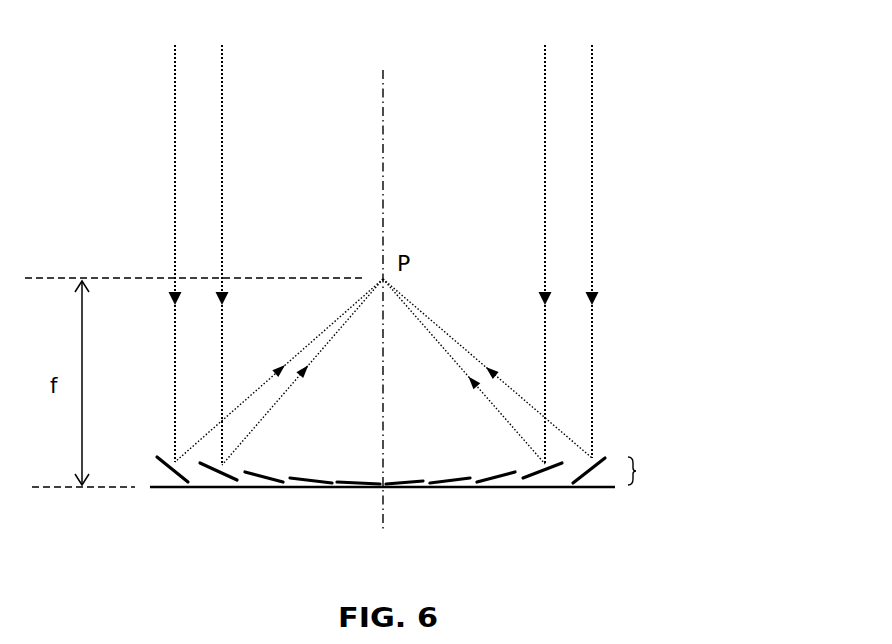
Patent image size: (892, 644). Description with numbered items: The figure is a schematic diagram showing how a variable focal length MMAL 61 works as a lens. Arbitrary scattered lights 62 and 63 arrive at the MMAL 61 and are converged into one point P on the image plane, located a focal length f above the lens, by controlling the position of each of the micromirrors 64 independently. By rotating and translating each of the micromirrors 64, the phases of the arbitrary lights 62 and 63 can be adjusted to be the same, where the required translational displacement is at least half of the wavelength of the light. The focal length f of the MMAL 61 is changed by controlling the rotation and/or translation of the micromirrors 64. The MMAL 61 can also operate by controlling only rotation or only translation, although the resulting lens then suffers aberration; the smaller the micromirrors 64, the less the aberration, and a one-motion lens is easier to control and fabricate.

The variable focal length MMAL 61 is at (648, 473).
The arbitrary scattered light 62 is at (533, 68).
The arbitrary scattered light 63 is at (605, 107).
The micromirror 64 is at (150, 488).